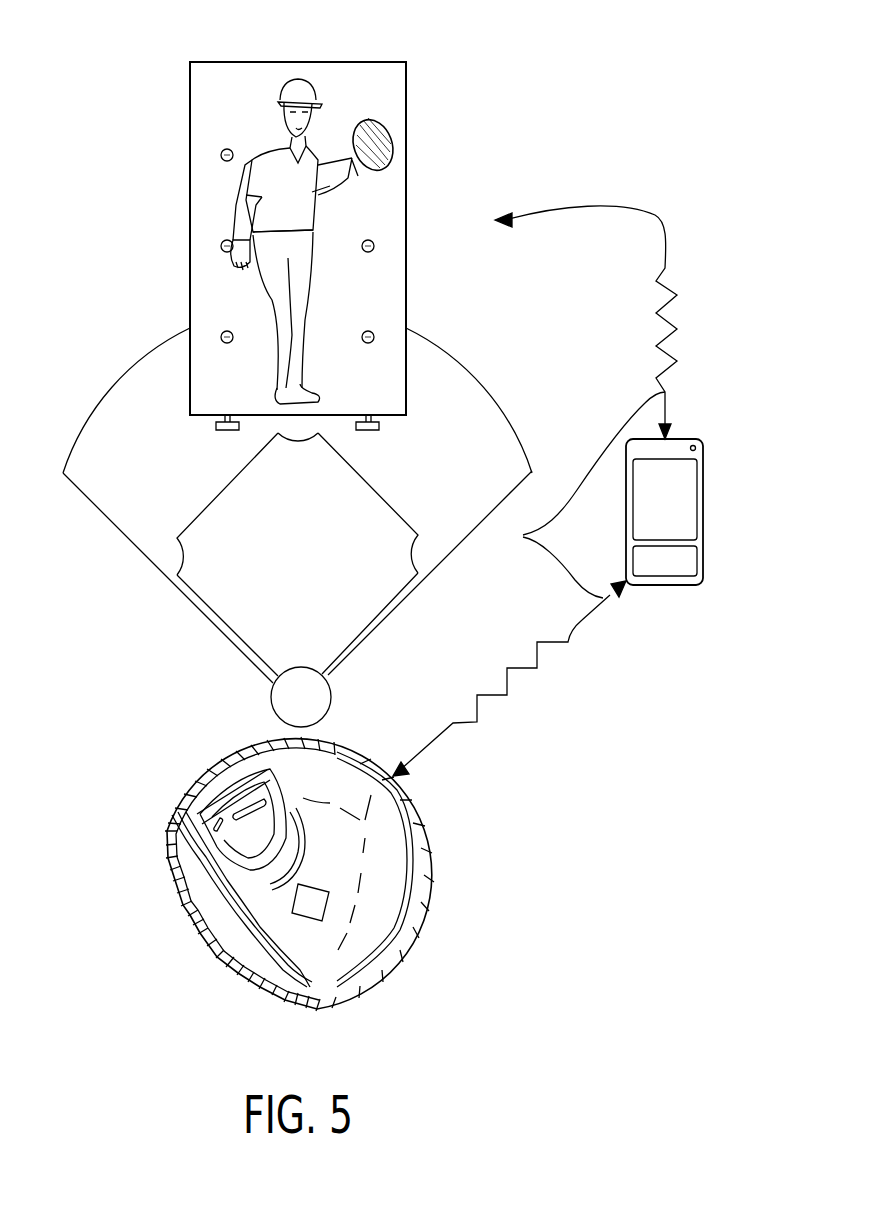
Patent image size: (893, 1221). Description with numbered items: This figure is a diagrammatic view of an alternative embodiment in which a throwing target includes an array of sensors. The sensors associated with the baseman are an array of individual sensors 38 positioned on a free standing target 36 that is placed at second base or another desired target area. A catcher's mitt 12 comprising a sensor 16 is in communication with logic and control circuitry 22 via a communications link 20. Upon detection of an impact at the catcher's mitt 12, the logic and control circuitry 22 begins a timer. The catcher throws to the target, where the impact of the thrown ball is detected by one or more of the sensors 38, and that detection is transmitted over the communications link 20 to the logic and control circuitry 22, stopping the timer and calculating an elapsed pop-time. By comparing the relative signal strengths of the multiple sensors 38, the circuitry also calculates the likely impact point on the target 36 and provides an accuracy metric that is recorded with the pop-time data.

The catcher's mitt 12 is at (316, 878).
The sensor 16 is at (312, 905).
The communications link 20 is at (529, 584).
The logic and control circuitry 22 is at (705, 507).
The free standing target 36 is at (365, 80).
The sensors 38 is at (220, 157).